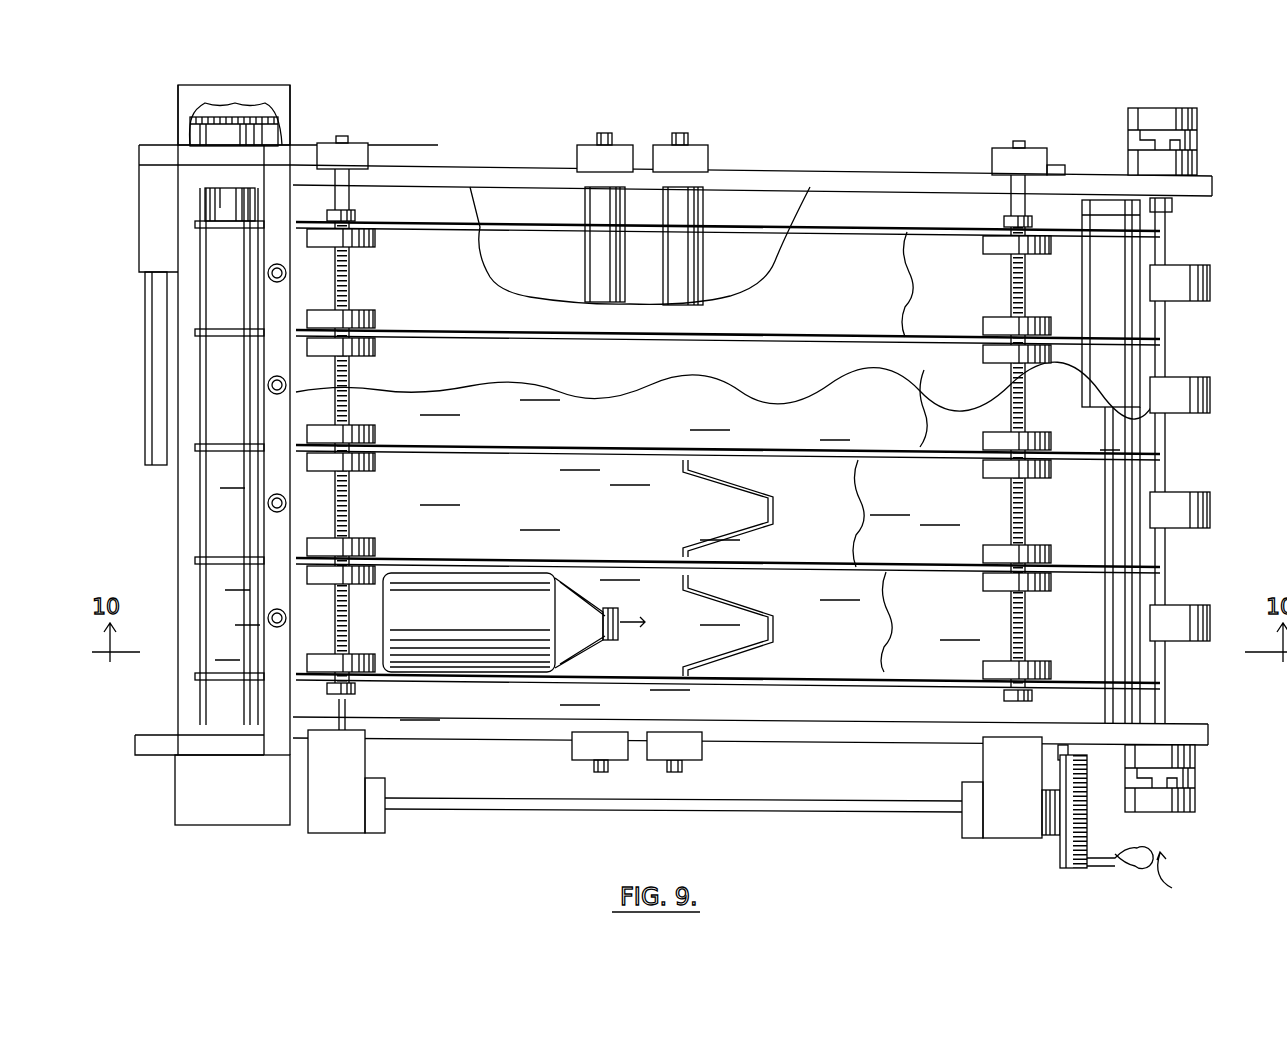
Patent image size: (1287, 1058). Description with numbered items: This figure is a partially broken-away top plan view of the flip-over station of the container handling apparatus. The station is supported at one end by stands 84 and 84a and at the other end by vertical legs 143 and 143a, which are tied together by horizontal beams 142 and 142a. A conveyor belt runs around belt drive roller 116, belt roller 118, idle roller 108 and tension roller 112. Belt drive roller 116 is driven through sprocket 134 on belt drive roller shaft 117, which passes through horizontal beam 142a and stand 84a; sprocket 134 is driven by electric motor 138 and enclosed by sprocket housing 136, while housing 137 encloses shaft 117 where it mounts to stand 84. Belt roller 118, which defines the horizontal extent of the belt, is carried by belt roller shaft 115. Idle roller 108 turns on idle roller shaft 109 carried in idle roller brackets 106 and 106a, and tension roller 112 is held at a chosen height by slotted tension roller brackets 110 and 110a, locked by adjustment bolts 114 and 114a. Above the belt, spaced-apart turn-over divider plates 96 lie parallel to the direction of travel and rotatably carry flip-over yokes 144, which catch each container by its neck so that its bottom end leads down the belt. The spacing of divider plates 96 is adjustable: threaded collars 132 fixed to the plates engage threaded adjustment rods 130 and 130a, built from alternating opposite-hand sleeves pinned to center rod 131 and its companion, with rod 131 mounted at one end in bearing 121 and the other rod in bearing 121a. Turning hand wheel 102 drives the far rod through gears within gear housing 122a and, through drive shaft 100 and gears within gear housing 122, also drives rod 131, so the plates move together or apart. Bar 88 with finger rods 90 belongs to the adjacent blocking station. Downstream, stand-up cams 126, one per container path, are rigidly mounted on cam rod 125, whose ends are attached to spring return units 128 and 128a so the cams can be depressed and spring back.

The stand 84 is at (160, 745).
The stand 84a is at (150, 152).
The bar 88 is at (275, 468).
The finger rods 90 is at (274, 392).
The turn-over divider plates 96 is at (905, 278).
The drive shaft 100 is at (718, 810).
The hand wheel 102 is at (1075, 809).
The idle roller bracket 106 is at (690, 748).
The idle roller bracket 106a is at (691, 160).
The idle roller 108 is at (678, 264).
The idle roller shaft 109 is at (690, 138).
The tension roller bracket 110 is at (590, 746).
The tension roller bracket 110a is at (602, 160).
The tension roller 112 is at (602, 263).
The adjustment bolt 114 is at (595, 762).
The adjustment bolt 114a is at (604, 133).
The belt roller shaft 115 is at (1172, 205).
The belt drive roller 116 is at (222, 297).
The belt drive roller shaft 117 is at (222, 200).
The belt roller 118 is at (1110, 272).
The bearing 121 is at (368, 155).
The bearing 121a is at (1013, 160).
The gear housing 122 is at (347, 768).
The gear housing 122a is at (1000, 766).
The cam rod 125 is at (1160, 602).
The stand-up cams 126 is at (1187, 286).
The spring return unit 128 is at (1192, 775).
The spring return unit 128a is at (1197, 142).
The threaded adjustment rod 130 is at (345, 621).
The threaded adjustment rod 130a is at (1023, 629).
The center rod 131 is at (346, 710).
The threaded collars 132 is at (343, 316).
The sprocket 134 is at (215, 130).
The sprocket housing 136 is at (285, 103).
The housing 137 is at (250, 808).
The electric motor 138 is at (165, 421).
The horizontal beam 142 is at (485, 723).
The horizontal beam 142a is at (435, 177).
The vertical leg 143 is at (1058, 746).
The vertical leg 143a is at (1057, 168).
The flip-over yokes 144 is at (746, 485).